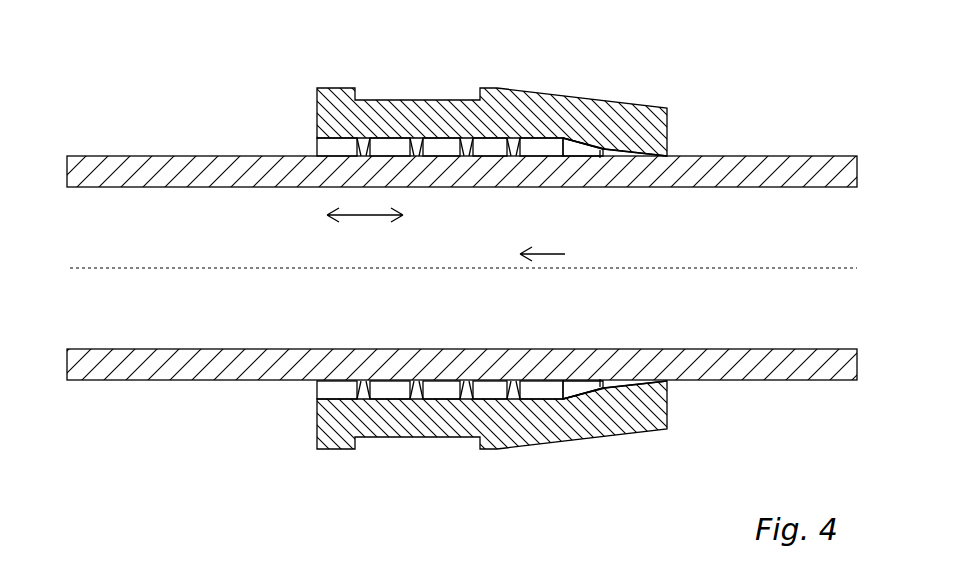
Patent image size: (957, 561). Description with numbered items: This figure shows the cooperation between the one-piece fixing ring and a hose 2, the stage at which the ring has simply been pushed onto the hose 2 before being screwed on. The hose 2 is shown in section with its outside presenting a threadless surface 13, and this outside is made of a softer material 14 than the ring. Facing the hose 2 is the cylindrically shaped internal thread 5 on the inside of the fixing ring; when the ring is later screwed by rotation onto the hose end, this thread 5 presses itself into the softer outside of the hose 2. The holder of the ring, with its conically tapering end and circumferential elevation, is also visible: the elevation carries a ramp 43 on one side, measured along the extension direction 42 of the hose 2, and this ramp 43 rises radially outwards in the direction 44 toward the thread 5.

The hose 2 is at (462, 274).
The softer material 14 is at (200, 172).
The threadless surface 13 is at (243, 382).
The internal thread 5 is at (423, 145).
The ramp 43 is at (593, 152).
The extension direction 42 is at (365, 218).
The direction of the thread 44 is at (548, 255).